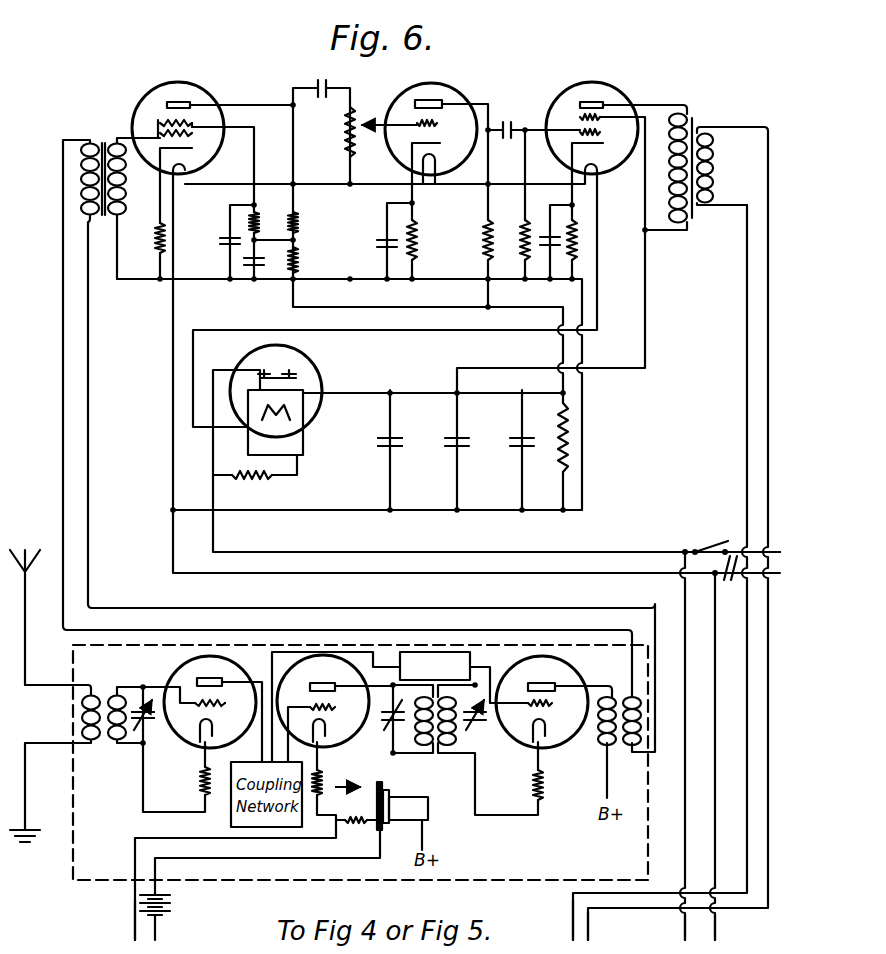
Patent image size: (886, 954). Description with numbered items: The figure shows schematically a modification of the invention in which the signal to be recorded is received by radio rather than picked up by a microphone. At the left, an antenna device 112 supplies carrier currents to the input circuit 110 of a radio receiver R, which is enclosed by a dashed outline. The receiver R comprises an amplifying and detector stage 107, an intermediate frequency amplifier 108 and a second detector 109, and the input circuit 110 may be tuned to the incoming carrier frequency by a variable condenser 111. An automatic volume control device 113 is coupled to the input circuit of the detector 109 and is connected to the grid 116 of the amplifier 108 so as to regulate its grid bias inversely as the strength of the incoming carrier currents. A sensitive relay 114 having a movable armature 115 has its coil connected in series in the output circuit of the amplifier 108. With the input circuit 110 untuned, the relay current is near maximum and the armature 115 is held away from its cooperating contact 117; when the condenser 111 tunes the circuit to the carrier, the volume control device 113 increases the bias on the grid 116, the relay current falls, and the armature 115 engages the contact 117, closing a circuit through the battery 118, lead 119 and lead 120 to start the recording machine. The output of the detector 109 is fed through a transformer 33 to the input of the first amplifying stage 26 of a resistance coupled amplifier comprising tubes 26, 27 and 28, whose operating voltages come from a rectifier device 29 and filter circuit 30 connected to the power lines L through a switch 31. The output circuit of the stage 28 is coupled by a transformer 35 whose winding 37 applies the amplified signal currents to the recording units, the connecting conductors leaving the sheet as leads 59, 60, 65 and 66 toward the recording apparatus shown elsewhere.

The amplifying tube 26 is at (174, 84).
The amplifying tube 27 is at (429, 86).
The amplifying tube 28 is at (589, 84).
The rectifier device 29 is at (292, 356).
The filter circuit 30 is at (432, 380).
The switch 31 is at (712, 543).
The transformer 33 is at (98, 136).
The transformer 35 is at (700, 114).
The transformer winding 37 is at (713, 165).
The lead 59 is at (590, 931).
The lead 60 is at (572, 922).
The lead 65 is at (718, 933).
The lead 66 is at (684, 926).
The amplifying and detector stage 107 is at (176, 671).
The intermediate frequency amplifier 108 is at (334, 659).
The second detector 109 is at (568, 666).
The input circuit 110 is at (120, 693).
The variable condenser 111 is at (146, 734).
The antenna device 112 is at (30, 627).
The automatic volume control device 113 is at (458, 651).
The sensitive relay 114 is at (408, 797).
The movable armature 115 is at (376, 804).
The grid 116 is at (330, 711).
The contact 117 is at (370, 784).
The battery 118 is at (176, 907).
The lead 119 is at (162, 931).
The lead 120 is at (134, 929).
The radio receiver R is at (68, 866).
The power lines L is at (728, 586).